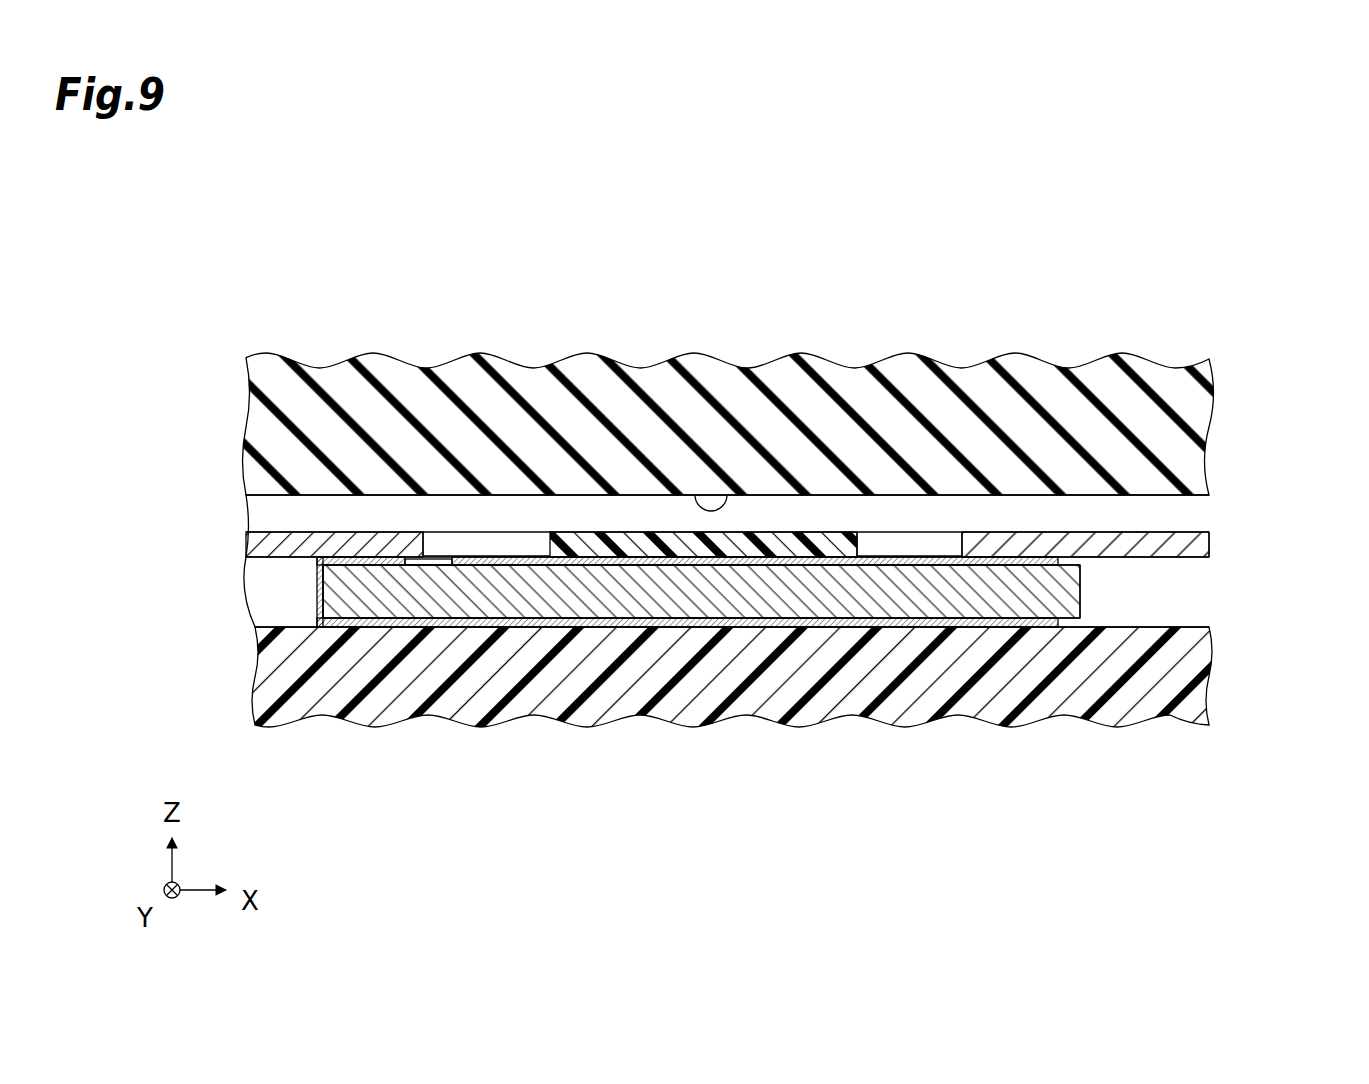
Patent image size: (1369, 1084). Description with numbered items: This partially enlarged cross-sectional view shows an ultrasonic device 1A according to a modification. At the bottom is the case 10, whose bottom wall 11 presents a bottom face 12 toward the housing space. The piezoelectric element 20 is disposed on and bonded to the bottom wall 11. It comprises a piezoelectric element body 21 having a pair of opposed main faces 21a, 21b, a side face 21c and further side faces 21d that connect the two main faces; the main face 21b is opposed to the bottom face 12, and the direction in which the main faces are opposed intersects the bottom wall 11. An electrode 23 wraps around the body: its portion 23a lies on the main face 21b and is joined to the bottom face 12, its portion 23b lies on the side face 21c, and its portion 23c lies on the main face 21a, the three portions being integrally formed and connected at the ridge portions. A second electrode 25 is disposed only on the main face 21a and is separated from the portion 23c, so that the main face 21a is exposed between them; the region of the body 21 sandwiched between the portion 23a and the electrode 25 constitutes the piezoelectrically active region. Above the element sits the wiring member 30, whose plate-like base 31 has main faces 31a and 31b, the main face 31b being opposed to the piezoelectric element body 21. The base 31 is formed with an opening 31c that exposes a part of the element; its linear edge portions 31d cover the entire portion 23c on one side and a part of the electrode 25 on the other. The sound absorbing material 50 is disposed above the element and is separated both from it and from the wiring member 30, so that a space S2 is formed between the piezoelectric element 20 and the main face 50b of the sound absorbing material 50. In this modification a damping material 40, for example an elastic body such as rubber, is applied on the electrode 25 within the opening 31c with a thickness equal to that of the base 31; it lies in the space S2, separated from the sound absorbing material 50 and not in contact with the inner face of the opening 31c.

The vibration device 1A is at (1224, 297).
The case 10 is at (737, 692).
The bottom wall 11 is at (1048, 716).
The bottom face 12 is at (262, 627).
The piezoelectric element 20 is at (837, 542).
The piezoelectric element body 21 is at (720, 568).
The main face 21a is at (510, 566).
The main face 21b is at (535, 620).
The side face 21c is at (317, 593).
The side face 21d is at (1080, 608).
The electrode 23 is at (666, 568).
The portion 23a is at (405, 628).
The portion 23b is at (290, 557).
The portion 23c is at (351, 556).
The electrode 25 is at (605, 557).
The wiring member 30 is at (799, 443).
The base 31 is at (1108, 545).
The main face 31a is at (1177, 532).
The main face 31b is at (1177, 558).
The opening 31c is at (960, 548).
The edge portion 31d is at (394, 548).
The damping material 40 is at (762, 542).
The sound absorbing material 50 is at (1182, 433).
The main face 50b is at (695, 497).
The space S2 is at (800, 505).